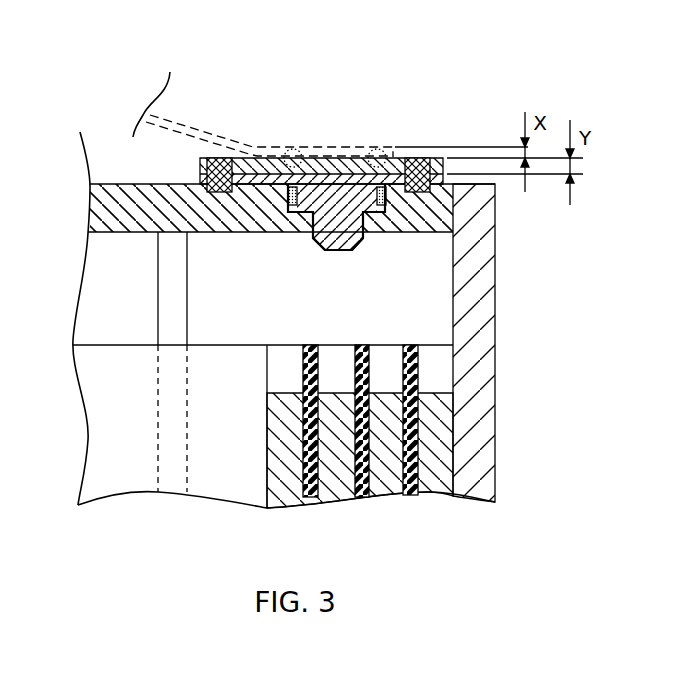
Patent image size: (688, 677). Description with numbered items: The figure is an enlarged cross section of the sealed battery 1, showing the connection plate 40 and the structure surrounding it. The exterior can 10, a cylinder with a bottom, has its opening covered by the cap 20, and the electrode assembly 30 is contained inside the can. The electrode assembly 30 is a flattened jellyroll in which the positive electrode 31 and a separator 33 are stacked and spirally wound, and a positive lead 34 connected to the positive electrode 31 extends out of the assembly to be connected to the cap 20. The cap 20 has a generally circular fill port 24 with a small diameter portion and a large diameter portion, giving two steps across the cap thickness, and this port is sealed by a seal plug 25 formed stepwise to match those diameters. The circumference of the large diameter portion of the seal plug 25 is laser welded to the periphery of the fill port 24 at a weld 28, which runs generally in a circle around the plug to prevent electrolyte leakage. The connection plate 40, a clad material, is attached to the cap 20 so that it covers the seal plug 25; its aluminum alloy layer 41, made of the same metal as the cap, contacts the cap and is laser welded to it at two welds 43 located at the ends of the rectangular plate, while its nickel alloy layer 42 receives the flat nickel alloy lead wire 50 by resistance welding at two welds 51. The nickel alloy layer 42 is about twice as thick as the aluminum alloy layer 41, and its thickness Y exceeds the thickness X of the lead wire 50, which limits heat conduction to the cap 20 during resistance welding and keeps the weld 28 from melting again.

The sealed battery 1 is at (483, 96).
The exterior can 10 is at (482, 343).
The cap 20 is at (118, 212).
The fill port 24 is at (349, 224).
The seal plug 25 is at (322, 250).
The weld 28 is at (387, 213).
The electrode assembly 30 is at (125, 314).
The positive electrode 31 is at (442, 468).
The separator 33 is at (423, 405).
The positive lead 34 is at (178, 273).
The connection plate 40 is at (321, 154).
The aluminum alloy layer 41 is at (212, 158).
The nickel alloy layer 42 is at (247, 156).
The weld 43 is at (416, 193).
The lead wire 50 is at (337, 138).
The weld 51 is at (297, 143).